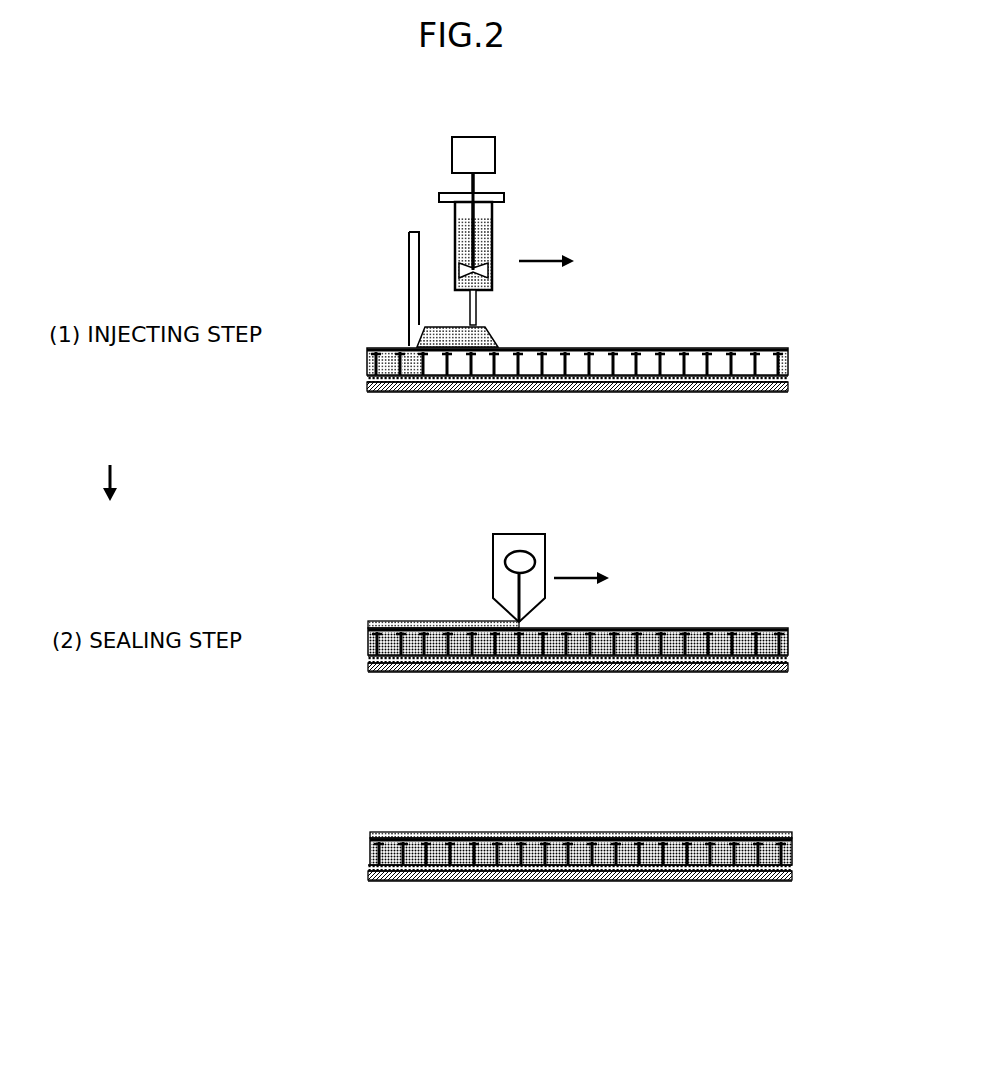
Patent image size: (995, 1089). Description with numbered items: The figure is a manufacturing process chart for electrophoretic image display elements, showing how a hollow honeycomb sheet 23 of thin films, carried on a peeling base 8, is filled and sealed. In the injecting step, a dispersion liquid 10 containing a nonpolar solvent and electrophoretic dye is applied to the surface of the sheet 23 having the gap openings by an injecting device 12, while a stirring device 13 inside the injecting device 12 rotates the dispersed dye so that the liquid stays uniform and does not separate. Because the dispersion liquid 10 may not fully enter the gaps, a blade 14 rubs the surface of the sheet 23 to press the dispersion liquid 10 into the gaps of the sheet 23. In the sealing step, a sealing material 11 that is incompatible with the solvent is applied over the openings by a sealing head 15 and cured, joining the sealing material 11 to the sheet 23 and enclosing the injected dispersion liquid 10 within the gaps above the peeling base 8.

The peeling base 8 is at (789, 393).
The dispersion liquid 10 is at (493, 329).
The sealing material 11 is at (377, 620).
The injecting device 12 is at (500, 193).
The stirring device 13 is at (493, 252).
The blade 14 is at (413, 275).
The sealing head 15 is at (540, 569).
The sheet 23 is at (789, 358).